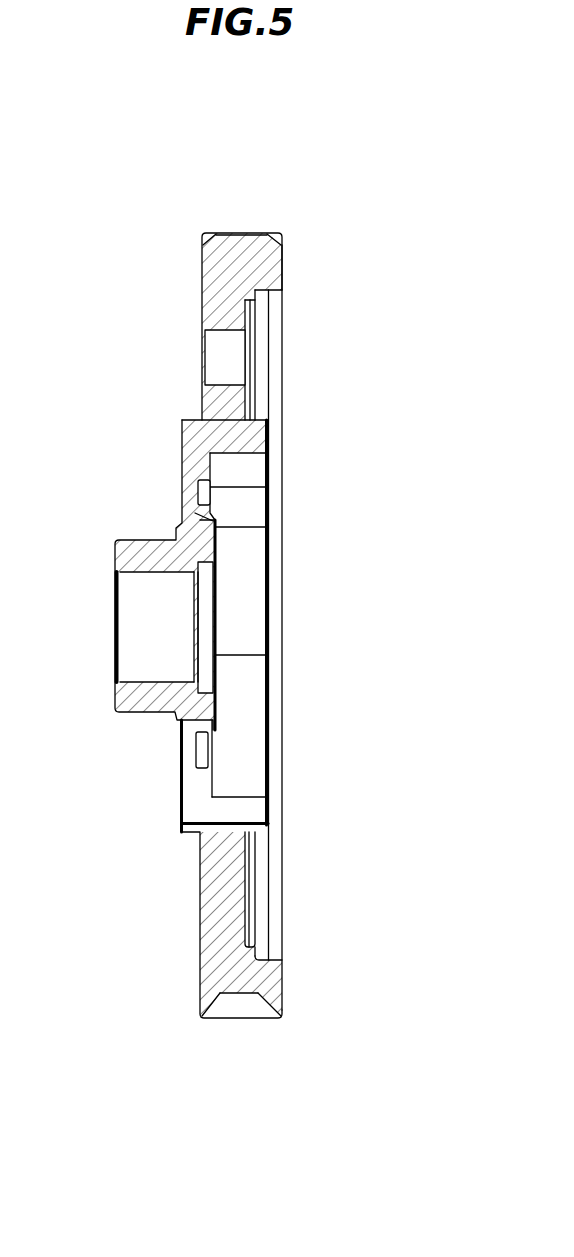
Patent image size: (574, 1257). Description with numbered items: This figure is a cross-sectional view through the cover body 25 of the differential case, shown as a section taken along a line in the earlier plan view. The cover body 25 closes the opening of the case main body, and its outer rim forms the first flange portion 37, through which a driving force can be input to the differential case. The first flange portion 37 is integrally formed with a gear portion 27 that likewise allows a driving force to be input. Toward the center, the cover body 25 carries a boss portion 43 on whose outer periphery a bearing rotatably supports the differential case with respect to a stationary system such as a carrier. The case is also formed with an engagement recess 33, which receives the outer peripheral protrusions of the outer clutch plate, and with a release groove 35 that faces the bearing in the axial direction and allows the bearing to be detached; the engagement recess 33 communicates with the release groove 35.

The cover body 25 is at (254, 596).
The gear portion 27 is at (240, 1008).
The engagement recess 33 is at (222, 823).
The release groove 35 is at (192, 778).
The first flange portion 37 is at (238, 248).
The boss portion 43 is at (147, 540).